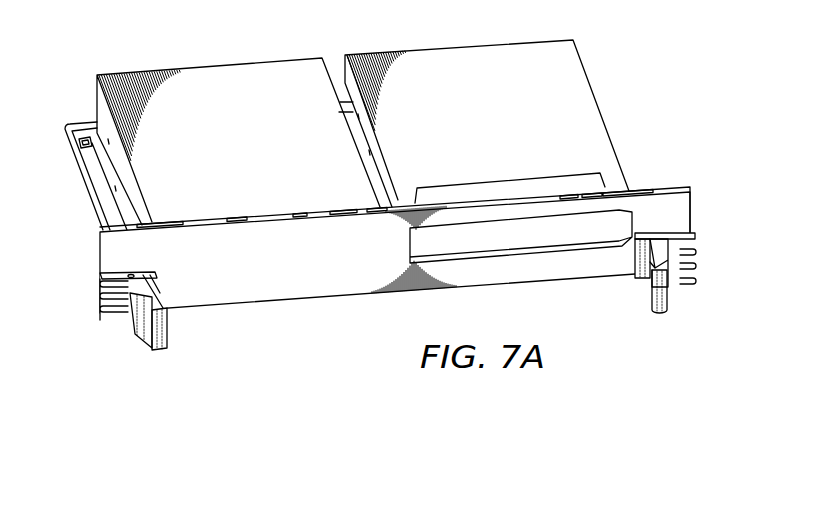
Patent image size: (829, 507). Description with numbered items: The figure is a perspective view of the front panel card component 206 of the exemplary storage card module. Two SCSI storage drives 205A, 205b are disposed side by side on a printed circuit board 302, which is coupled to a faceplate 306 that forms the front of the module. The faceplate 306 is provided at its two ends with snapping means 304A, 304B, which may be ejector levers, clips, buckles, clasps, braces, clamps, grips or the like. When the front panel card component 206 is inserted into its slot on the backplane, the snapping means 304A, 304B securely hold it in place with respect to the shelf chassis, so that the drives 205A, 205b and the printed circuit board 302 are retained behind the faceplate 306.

The SCSI storage drive 205A is at (235, 72).
The SCSI storage drive 205b is at (475, 52).
The front panel card component 206 is at (385, 203).
The printed circuit board 302 is at (78, 182).
The snapping means 304A is at (162, 352).
The snapping means 304B is at (660, 313).
The faceplate 306 is at (292, 300).